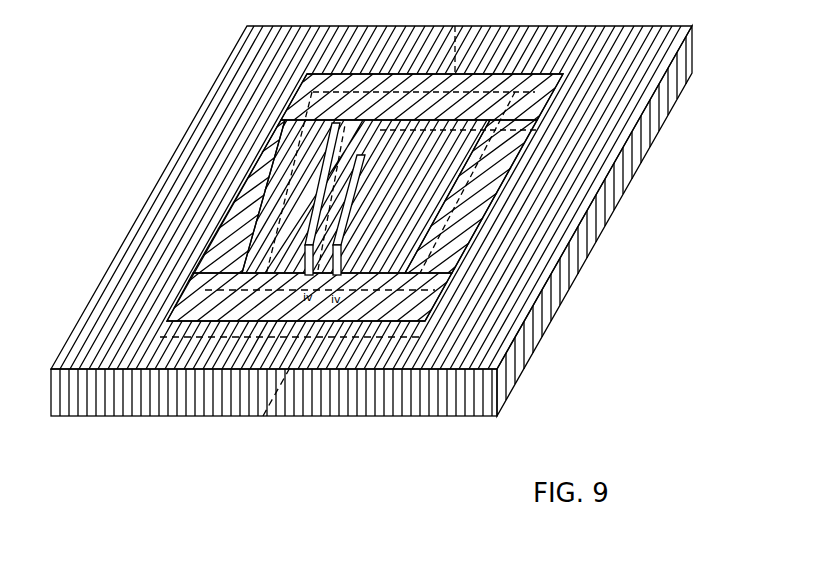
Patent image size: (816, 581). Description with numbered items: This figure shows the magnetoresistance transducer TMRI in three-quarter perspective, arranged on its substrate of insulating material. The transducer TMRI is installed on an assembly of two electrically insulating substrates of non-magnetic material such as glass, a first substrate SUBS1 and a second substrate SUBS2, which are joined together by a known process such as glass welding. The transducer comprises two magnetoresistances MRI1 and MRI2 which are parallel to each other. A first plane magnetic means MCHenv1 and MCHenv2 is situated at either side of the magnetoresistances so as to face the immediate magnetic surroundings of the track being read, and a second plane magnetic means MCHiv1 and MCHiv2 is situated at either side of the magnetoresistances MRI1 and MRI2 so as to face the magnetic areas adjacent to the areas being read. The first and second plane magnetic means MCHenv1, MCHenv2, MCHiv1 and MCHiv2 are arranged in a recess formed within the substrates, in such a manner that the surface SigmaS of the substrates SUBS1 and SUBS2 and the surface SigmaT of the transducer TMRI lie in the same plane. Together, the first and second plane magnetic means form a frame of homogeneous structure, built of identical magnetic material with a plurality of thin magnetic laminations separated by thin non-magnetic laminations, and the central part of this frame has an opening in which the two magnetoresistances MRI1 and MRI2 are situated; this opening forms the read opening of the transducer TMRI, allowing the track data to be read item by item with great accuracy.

The first substrate SUBS1 is at (100, 417).
The second substrate SUBS2 is at (413, 416).
The surface of the substrates SigmaS is at (371, 197).
The surface of the transducer SigmaT is at (391, 181).
The magnetoresistance transducer TMRI is at (424, 76).
The first plane magnetic means MCHenv2 is at (422, 97).
The first plane magnetic means MCHenv1 is at (309, 299).
The second plane magnetic means MCHiv1 is at (270, 180).
The second plane magnetic means MCHiv2 is at (553, 198).
The first magnetoresistance MRI1 is at (333, 150).
The second magnetoresistance MRI2 is at (360, 165).